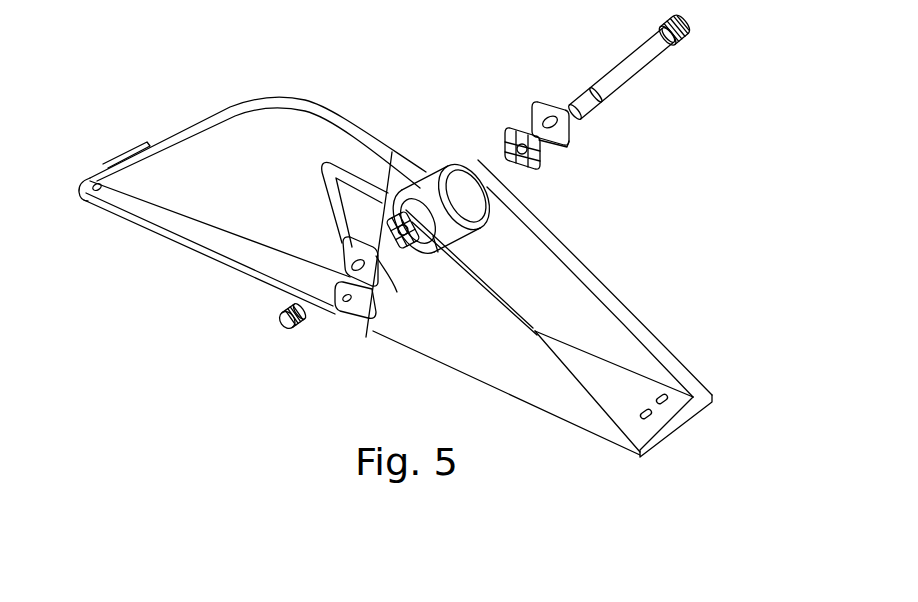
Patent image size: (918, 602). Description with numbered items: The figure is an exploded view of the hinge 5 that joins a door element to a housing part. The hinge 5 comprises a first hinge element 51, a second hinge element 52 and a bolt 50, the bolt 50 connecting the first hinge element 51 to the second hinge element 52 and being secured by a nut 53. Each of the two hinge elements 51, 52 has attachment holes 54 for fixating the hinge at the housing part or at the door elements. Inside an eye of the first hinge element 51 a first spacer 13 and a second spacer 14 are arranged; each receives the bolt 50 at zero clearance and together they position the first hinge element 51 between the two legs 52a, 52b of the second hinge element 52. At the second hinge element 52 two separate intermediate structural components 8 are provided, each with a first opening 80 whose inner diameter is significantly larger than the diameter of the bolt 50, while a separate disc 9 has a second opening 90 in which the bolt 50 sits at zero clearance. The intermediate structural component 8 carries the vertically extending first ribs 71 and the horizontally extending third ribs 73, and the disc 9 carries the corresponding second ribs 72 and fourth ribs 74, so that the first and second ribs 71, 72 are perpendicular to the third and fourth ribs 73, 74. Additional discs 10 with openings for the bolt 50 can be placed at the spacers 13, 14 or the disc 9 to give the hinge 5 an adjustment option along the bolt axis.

The hinge 5 is at (232, 76).
The first hinge element 51 is at (278, 127).
The attachment holes 54 is at (90, 192).
The nut 53 is at (288, 327).
The second opening 90 is at (338, 318).
The disc 9 is at (371, 288).
The first opening 80 is at (398, 252).
The third ribs 73 is at (384, 203).
The first ribs 71 is at (420, 207).
The fourth ribs 74 is at (510, 140).
The second ribs 72 is at (508, 128).
The additional discs 10 is at (545, 103).
The bolt 50 is at (638, 68).
The first spacer 13 is at (467, 163).
The second spacer 14 is at (440, 172).
The intermediate structural component 8 is at (438, 252).
The leg of the second hinge element 52a is at (610, 293).
The leg of the second hinge element 52b is at (533, 335).
The second hinge element 52 is at (627, 383).